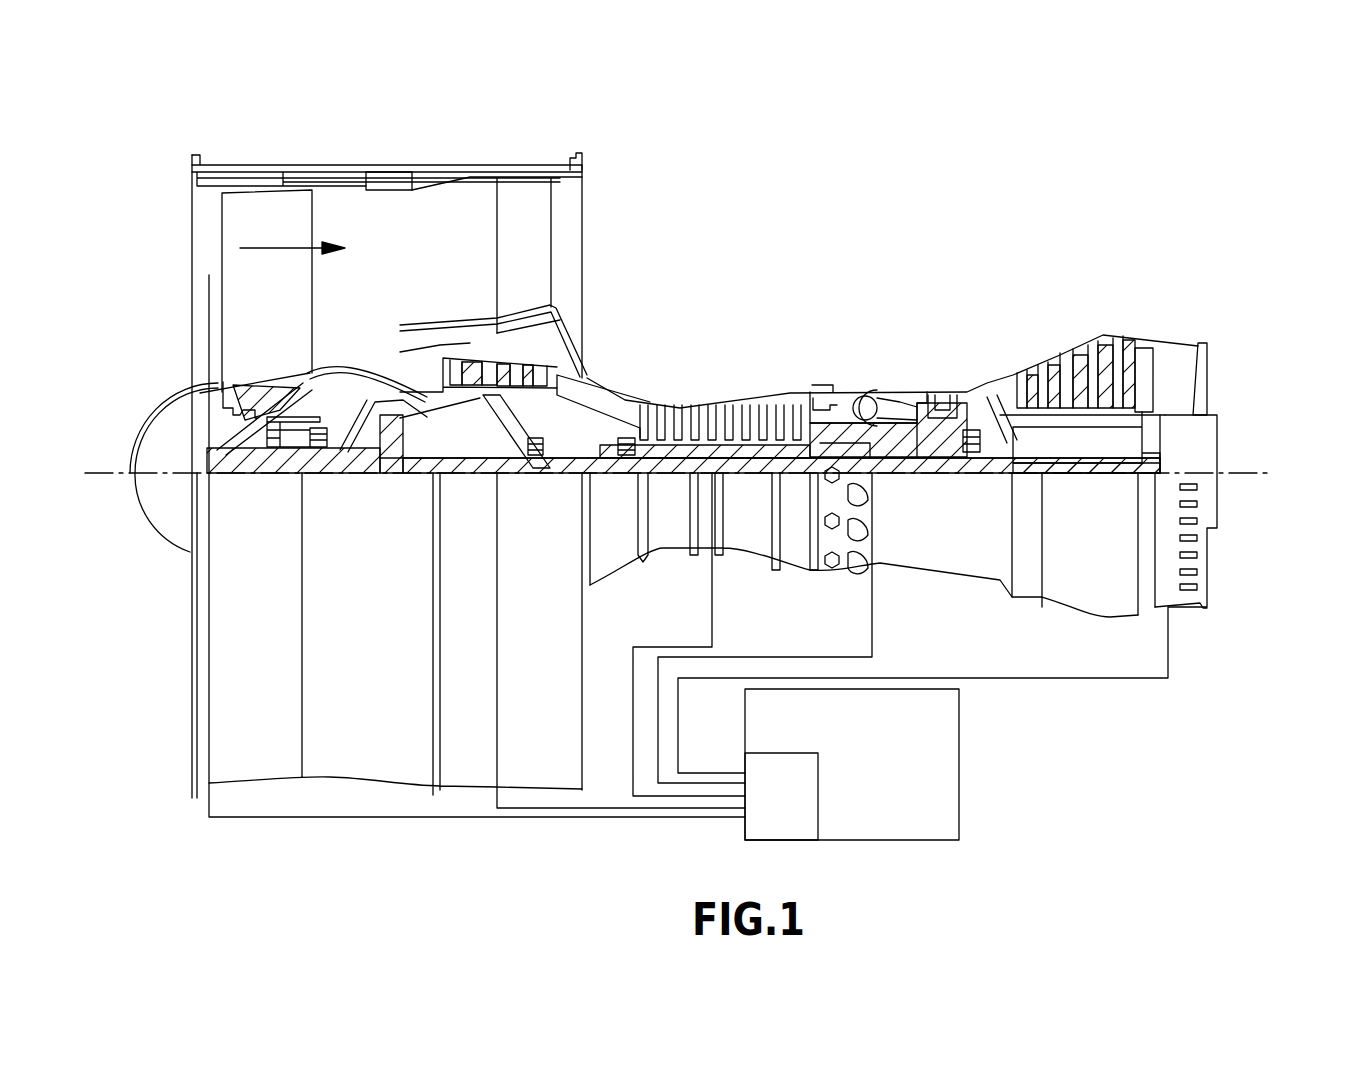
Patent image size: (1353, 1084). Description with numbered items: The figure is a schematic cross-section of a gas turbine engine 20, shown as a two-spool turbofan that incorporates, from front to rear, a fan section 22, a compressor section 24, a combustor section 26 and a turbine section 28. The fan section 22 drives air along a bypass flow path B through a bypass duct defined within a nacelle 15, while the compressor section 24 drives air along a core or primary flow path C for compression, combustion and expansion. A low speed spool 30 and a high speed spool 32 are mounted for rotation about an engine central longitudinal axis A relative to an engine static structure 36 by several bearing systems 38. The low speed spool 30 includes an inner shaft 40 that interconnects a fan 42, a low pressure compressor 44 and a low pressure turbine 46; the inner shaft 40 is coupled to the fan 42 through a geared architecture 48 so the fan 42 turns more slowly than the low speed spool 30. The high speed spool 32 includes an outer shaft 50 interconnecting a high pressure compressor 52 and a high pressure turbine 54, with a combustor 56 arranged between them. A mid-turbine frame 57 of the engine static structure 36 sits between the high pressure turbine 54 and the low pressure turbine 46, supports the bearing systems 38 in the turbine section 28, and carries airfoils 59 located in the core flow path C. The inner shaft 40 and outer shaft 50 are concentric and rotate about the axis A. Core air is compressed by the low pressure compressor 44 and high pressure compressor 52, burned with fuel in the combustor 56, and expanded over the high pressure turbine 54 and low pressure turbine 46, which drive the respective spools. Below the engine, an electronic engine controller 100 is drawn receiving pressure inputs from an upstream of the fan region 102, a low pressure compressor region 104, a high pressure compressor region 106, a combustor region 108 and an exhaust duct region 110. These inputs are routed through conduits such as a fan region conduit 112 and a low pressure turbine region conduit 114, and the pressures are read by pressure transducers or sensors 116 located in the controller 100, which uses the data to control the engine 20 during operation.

The gas turbine engine 20 is at (905, 180).
The fan section 22 is at (303, 150).
The nacelle 15 is at (383, 178).
The compressor section 24 is at (645, 355).
The combustor section 26 is at (875, 350).
The turbine section 28 is at (1030, 320).
The low speed spool 30 is at (748, 510).
The high speed spool 32 is at (800, 392).
The engine static structure 36 is at (795, 540).
The bearing systems 38 is at (534, 475).
The inner shaft 40 is at (603, 475).
The fan 42 is at (274, 288).
The low pressure compressor 44 is at (515, 372).
The low pressure turbine 46 is at (1078, 352).
The geared architecture 48 is at (392, 475).
The outer shaft 50 is at (862, 456).
The high pressure compressor 52 is at (745, 405).
The high pressure turbine 54 is at (942, 395).
The combustor 56 is at (890, 410).
The mid-turbine frame 57 is at (993, 367).
The airfoils 59 is at (1000, 410).
The electronic engine controller 100 is at (960, 795).
The upstream of the fan region 102 is at (209, 275).
The low pressure compressor region 104 is at (516, 357).
The high pressure compressor region 106 is at (712, 400).
The combustor region 108 is at (865, 406).
The exhaust duct region 110 is at (1168, 366).
The fan region conduit 112 is at (209, 630).
The low pressure turbine region conduit 114 is at (497, 625).
The pressure transducers or sensors 116 is at (818, 778).
The engine central longitudinal axis A is at (1265, 470).
The bypass flow path B is at (276, 248).
The core flow path C is at (360, 352).